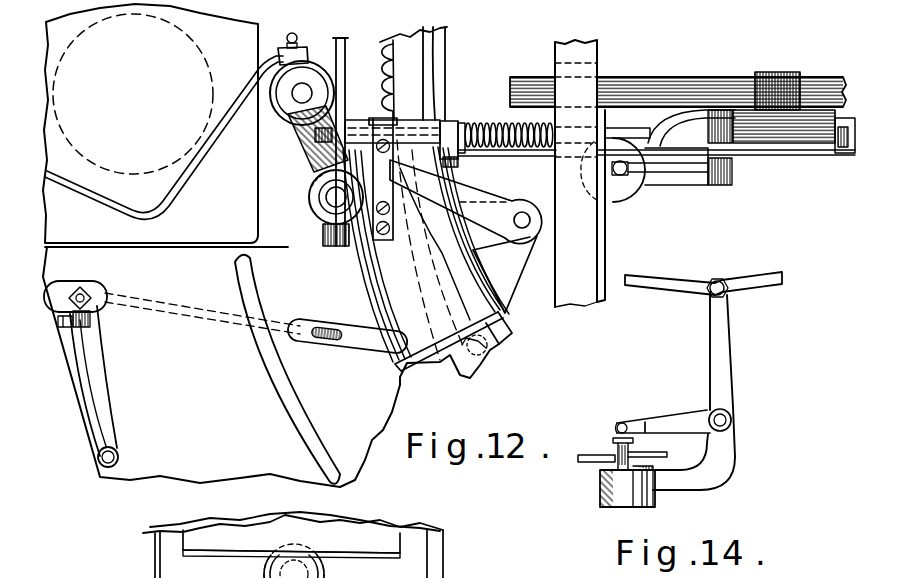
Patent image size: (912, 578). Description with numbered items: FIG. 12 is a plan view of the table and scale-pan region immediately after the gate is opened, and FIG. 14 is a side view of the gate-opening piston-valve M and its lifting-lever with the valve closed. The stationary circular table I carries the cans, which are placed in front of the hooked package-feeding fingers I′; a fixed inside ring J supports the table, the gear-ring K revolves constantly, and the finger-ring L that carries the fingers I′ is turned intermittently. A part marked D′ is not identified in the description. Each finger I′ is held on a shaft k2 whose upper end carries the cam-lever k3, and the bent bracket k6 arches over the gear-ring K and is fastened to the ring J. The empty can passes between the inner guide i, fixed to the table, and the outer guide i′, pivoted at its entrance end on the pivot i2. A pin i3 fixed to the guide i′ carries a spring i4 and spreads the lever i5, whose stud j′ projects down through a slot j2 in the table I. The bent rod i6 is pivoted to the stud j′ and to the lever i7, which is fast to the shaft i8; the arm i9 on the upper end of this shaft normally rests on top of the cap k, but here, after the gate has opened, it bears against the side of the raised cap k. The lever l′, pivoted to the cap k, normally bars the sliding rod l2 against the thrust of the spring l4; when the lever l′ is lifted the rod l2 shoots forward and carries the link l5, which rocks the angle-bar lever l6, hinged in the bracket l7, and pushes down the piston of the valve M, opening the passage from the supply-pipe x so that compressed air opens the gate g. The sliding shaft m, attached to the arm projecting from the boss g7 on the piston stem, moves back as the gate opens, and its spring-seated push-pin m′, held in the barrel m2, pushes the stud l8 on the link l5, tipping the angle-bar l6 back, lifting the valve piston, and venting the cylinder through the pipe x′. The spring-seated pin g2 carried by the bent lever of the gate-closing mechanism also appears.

In FIG. 12, the spring-seated pin g2 is at (165, 125).
In FIG. 12, the package-feeding fingers I′ is at (207, 160).
In FIG. 12, the plate D′ is at (211, 206).
In FIG. 12, the shaft k2 is at (300, 96).
In FIG. 12, the cam-lever k3 is at (310, 145).
In FIG. 12, the cap k is at (309, 200).
In FIG. 12, the finger-ring L is at (343, 127).
In FIG. 12, the arm l′ is at (336, 248).
In FIG. 12, the sliding rod l2 is at (462, 120).
In FIG. 12, the spring l4 is at (484, 122).
In FIG. 12, the fixed inside ring J is at (447, 48).
In FIG. 12, the gear-ring K is at (422, 70).
In FIG. 12, the bent bracket k6 is at (427, 255).
In FIG. 12, the arm i9 is at (467, 196).
In FIG. 12, the shaft i8 is at (524, 212).
In FIG. 12, the lever i7 is at (485, 290).
In FIG. 12, the stationary circular table I is at (271, 389).
In FIG. 12, the slot j2 is at (52, 292).
In FIG. 12, the stud j′ is at (85, 292).
In FIG. 12, the outer guide i′ is at (110, 382).
In FIG. 12, the lever i5 is at (82, 400).
In FIG. 12, the pivot i2 is at (118, 454).
In FIG. 12, the spring i4 is at (88, 326).
In FIG. 12, the pin i3 is at (64, 328).
In FIG. 12, the inner guide i is at (287, 378).
In FIG. 12, the bent rod i6 is at (345, 340).
In FIG. 12, the piston-valve M is at (631, 173).
In FIG. 14, the piston-valve M is at (654, 414).
In FIG. 12, the bracket l7 is at (687, 187).
In FIG. 14, the bracket l7 is at (733, 455).
In FIG. 12, the shaft m is at (642, 77).
In FIG. 12, the barrel m2 is at (778, 72).
In FIG. 12, the spring-seated push-pin m′ is at (825, 143).
In FIG. 12, the stud l8 is at (848, 153).
In FIG. 12, the link l5 is at (780, 157).
In FIG. 14, the link l5 is at (668, 282).
In FIG. 12, the gate g is at (160, 554).
In FIG. 12, the boss g7 is at (325, 575).
In FIG. 14, the angle-bar lever l6 is at (727, 354).
In FIG. 14, the supply-pipe x is at (662, 455).
In FIG. 14, the pipe x′ is at (582, 464).